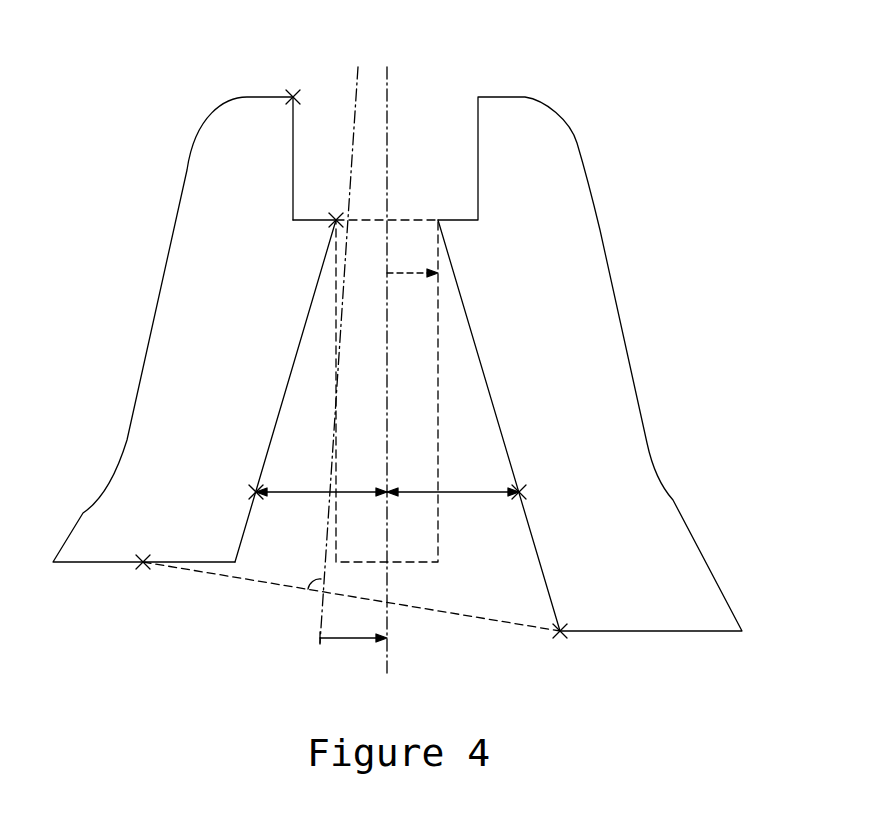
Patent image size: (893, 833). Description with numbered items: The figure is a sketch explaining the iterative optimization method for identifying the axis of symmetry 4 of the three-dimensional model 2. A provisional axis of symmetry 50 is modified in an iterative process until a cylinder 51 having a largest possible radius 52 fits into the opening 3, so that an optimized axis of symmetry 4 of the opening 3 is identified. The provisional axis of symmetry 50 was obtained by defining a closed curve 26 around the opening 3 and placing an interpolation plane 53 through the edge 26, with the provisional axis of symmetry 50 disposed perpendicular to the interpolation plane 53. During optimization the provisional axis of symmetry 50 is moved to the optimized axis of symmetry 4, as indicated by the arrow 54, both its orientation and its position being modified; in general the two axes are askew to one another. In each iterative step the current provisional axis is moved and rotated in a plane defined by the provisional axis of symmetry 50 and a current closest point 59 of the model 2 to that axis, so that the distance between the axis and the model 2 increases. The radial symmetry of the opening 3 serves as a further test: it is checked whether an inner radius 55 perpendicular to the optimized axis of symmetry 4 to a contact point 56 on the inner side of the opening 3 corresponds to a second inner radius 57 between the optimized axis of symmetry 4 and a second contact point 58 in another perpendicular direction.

The 3D model 2 is at (525, 97).
The opening 3 is at (493, 403).
The optimized axis of symmetry 4 is at (388, 100).
The closed curve 26 is at (145, 565).
The provisional axis of symmetry 50 is at (356, 100).
The cylinder 51 is at (437, 337).
The radius 52 is at (410, 272).
The interpolation plane 53 is at (472, 618).
The arrow 54 is at (355, 640).
The inner radius 55 is at (453, 491).
The contact point 56 is at (525, 493).
The second inner radius 57 is at (297, 491).
The second contact point 58 is at (250, 491).
The closest point 59 is at (336, 218).